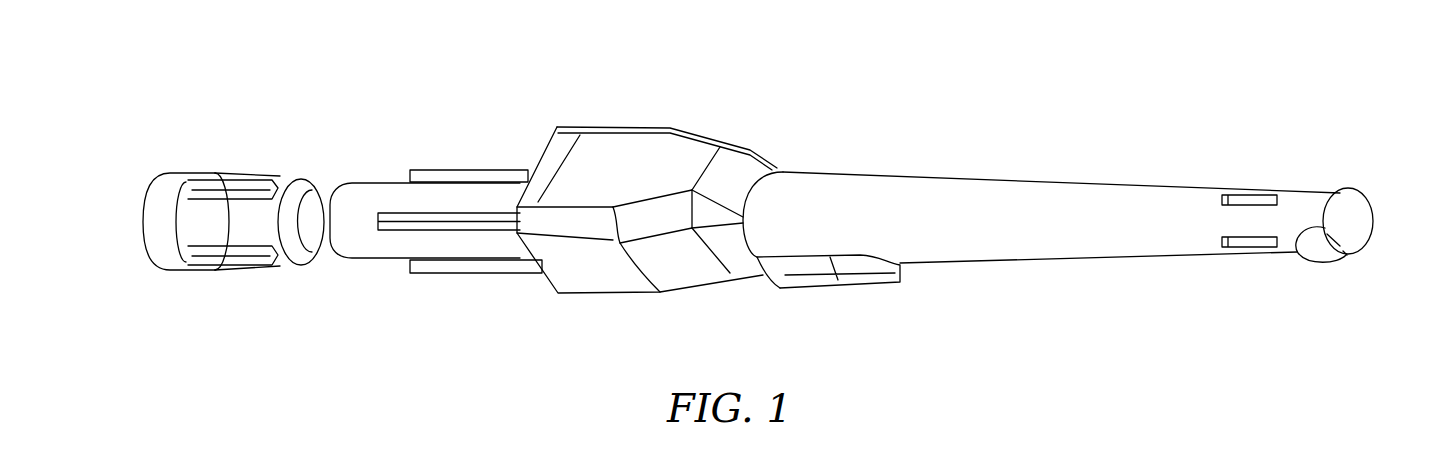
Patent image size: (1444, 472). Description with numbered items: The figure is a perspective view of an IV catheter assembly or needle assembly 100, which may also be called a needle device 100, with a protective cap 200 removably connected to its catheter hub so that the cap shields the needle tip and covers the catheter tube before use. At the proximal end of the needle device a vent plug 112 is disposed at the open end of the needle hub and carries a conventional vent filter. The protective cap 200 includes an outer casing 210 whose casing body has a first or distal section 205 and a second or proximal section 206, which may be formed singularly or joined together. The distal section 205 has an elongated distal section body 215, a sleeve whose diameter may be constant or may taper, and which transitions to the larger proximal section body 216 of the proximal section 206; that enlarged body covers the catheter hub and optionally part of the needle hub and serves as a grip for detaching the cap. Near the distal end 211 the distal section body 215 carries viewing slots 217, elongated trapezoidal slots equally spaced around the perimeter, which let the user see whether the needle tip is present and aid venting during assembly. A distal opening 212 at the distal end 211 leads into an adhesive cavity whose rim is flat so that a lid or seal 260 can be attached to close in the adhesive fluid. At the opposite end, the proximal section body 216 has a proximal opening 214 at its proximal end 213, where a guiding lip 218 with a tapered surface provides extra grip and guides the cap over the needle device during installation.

The needle assembly 100 is at (303, 116).
The vent plug 112 is at (205, 270).
The protective cap 200 is at (966, 172).
The first section 205 is at (871, 170).
The second section 206 is at (726, 125).
The outer casing 210 is at (1002, 262).
The distal end 211 is at (1352, 188).
The distal opening 212 is at (1358, 256).
The proximal end 213 is at (553, 296).
The proximal opening 214 is at (542, 283).
The distal section body 215 is at (1127, 183).
The proximal section body 216 is at (627, 127).
The viewing slot 217 is at (1240, 251).
The guiding lip 218 is at (548, 135).
The seal 260 is at (1378, 210).